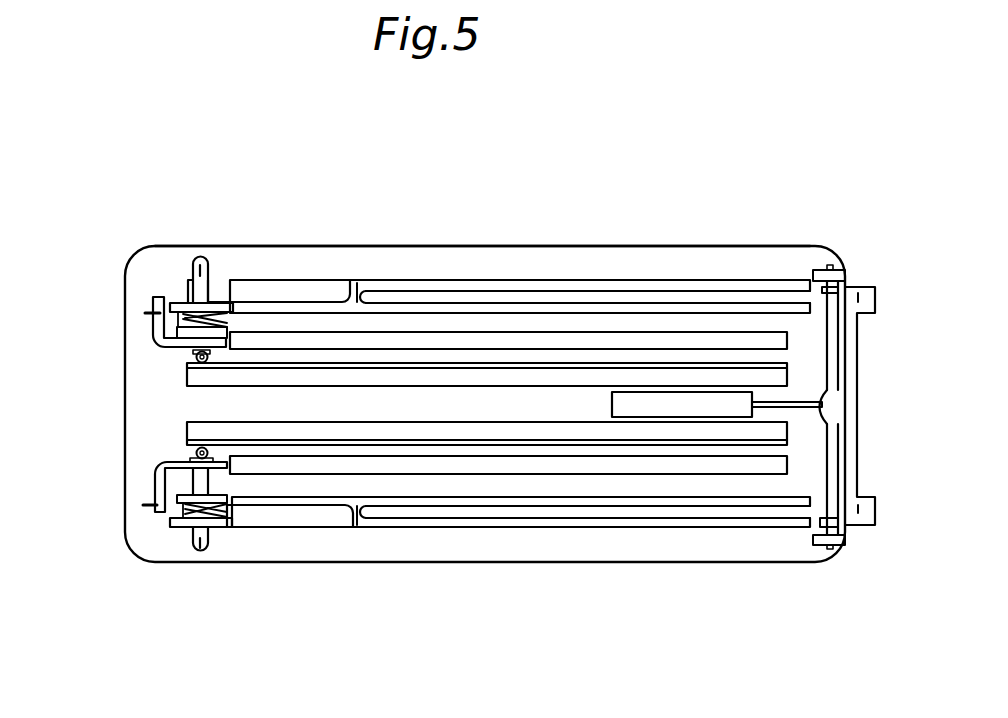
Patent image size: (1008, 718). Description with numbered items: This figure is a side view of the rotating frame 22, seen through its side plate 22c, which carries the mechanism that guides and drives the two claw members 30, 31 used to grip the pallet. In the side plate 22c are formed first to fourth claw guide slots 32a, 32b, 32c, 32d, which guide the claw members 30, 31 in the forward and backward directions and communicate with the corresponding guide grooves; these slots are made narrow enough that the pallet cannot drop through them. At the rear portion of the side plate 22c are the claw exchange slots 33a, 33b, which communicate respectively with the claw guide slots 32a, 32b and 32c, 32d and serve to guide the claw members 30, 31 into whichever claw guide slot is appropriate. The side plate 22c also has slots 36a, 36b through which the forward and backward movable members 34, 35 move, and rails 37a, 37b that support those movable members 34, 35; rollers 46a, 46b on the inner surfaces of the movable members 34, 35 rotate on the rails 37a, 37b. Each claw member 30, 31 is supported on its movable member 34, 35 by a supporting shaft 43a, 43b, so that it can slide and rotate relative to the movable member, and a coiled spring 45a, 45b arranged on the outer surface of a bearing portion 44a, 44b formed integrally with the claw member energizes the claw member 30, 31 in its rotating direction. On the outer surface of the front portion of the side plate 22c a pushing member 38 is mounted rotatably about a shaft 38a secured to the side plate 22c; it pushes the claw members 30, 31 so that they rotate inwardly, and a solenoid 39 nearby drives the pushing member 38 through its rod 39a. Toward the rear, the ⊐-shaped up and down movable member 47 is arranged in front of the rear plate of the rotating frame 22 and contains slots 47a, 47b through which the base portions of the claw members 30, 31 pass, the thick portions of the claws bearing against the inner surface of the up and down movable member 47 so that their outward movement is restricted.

The rotating frame 22 is at (473, 247).
The side plate 22c is at (436, 270).
The claw member 30 is at (163, 303).
The claw member 31 is at (232, 530).
The first claw guide slot 32a is at (523, 281).
The second claw guide slot 32b is at (676, 302).
The third claw guide slot 32c is at (632, 527).
The fourth claw guide slot 32d is at (487, 527).
The claw exchange slot 33a is at (360, 290).
The claw exchange slot 33b is at (352, 530).
The forward and backward movable member 34 is at (145, 313).
The forward and backward movable member 35 is at (143, 505).
The slot 36a is at (590, 338).
The slot 36b is at (548, 475).
The rail 37a is at (187, 372).
The rail 37b is at (187, 433).
The pushing member 38 is at (845, 408).
The shaft 38a is at (830, 330).
The solenoid 39 is at (696, 417).
The rod 39a is at (797, 408).
The supporting shaft 43a is at (201, 258).
The supporting shaft 43b is at (203, 550).
The bearing portion 44a is at (160, 300).
The bearing portion 44b is at (160, 512).
The coiled spring 45a is at (212, 318).
The coiled spring 45b is at (190, 518).
The roller 46a is at (196, 354).
The roller 46b is at (196, 453).
The up and down movable member 47 is at (290, 297).
The slot 47a is at (333, 300).
The slot 47b is at (328, 528).